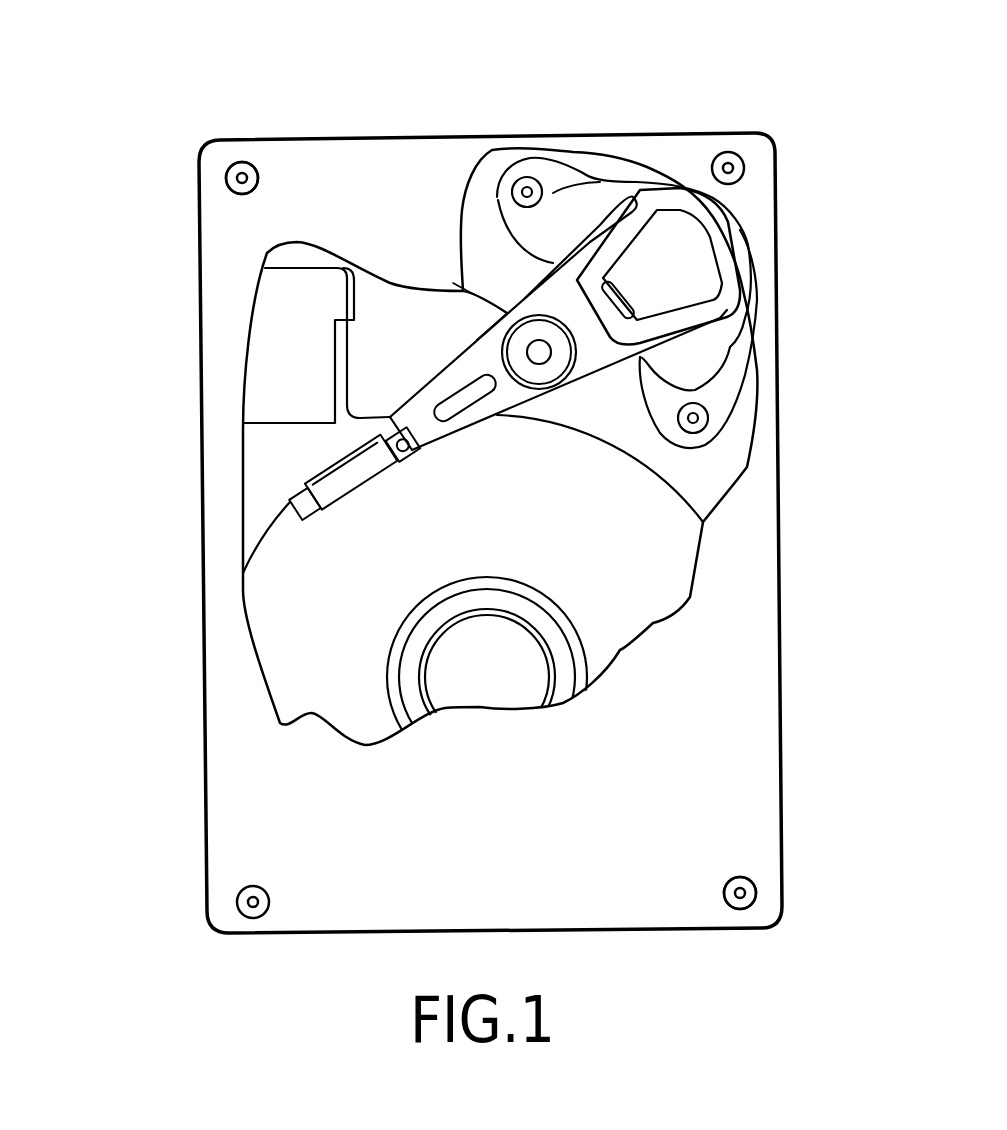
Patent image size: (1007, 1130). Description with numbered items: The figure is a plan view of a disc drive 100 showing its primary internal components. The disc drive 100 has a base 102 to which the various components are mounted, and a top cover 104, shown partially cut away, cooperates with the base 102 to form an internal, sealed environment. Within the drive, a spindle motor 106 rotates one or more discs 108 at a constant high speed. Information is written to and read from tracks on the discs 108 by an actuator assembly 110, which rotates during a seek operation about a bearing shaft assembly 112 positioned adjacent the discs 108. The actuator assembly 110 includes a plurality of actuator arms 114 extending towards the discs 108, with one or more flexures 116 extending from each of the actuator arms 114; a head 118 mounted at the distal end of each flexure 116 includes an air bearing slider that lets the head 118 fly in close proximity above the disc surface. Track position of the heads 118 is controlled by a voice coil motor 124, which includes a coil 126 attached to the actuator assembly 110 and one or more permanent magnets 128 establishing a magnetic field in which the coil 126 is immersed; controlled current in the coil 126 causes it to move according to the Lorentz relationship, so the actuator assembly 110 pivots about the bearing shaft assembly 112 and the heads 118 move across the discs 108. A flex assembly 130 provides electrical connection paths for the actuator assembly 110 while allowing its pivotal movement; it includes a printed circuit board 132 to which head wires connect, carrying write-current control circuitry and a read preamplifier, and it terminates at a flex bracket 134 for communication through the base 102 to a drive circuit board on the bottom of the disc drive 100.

The disc drive 100 is at (238, 100).
The base 102 is at (272, 487).
The top cover 104 is at (255, 777).
The spindle motor 106 is at (490, 683).
The discs 108 is at (653, 592).
The actuator assembly 110 is at (578, 391).
The bearing shaft assembly 112 is at (560, 371).
The actuator arms 114 is at (475, 415).
The flexures 116 is at (347, 478).
The head 118 is at (295, 518).
The voice coil motor 124 is at (566, 138).
The coil 126 is at (723, 260).
The permanent magnets 128 is at (570, 220).
The flex assembly 130 is at (452, 352).
The printed circuit board 132 is at (457, 287).
The flex bracket 134 is at (288, 358).